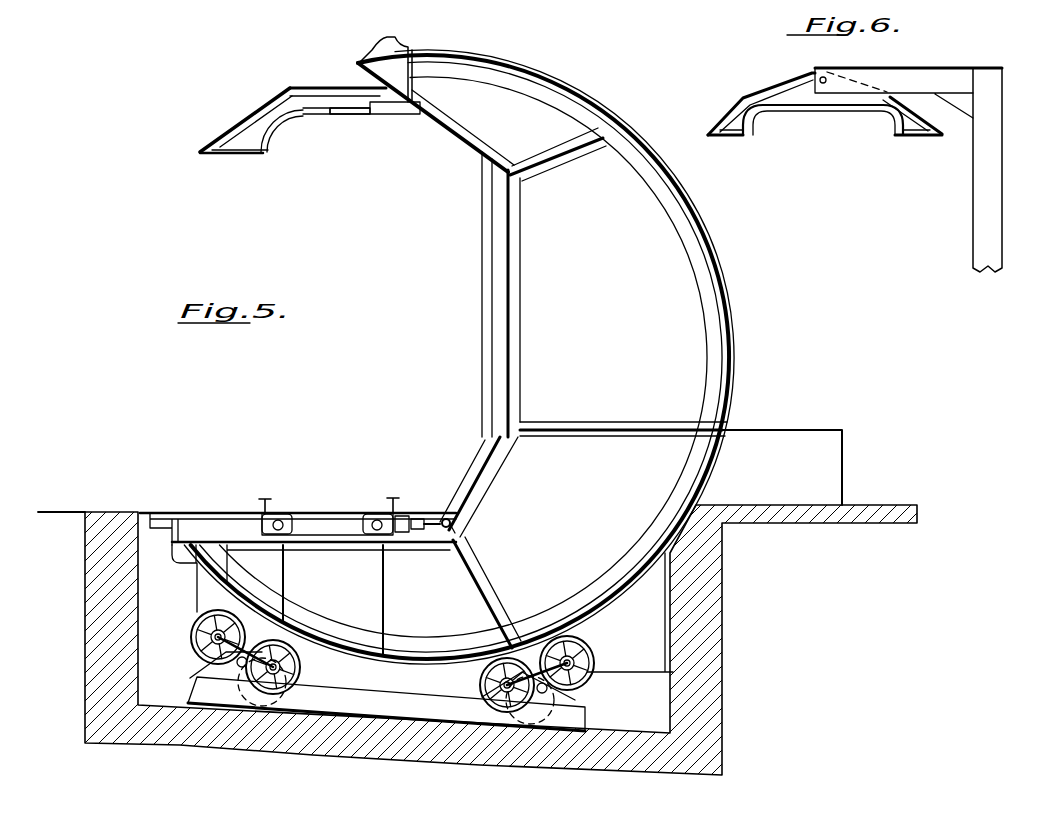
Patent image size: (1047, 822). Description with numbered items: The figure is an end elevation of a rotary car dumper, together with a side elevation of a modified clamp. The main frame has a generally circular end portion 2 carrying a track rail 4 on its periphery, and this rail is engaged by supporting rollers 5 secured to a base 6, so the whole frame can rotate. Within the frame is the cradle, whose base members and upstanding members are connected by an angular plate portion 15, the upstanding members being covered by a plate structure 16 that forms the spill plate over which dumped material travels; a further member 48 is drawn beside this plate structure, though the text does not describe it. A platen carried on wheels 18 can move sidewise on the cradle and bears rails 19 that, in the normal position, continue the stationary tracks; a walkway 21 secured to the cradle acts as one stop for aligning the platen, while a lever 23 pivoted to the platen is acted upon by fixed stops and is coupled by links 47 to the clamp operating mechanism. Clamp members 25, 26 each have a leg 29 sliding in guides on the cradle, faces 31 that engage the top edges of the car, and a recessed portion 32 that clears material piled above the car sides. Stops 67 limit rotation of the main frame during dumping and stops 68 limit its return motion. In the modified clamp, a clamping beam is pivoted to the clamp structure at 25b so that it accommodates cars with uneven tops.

In FIG. 5, the end portion 2 is at (482, 187).
In FIG. 5, the track rail 4 is at (703, 223).
In FIG. 5, the supporting roller 5 is at (196, 641).
In FIG. 5, the base 6 is at (386, 704).
In FIG. 5, the angular plate portion 15 is at (483, 482).
In FIG. 5, the plate structure 16 is at (506, 346).
In FIG. 5, the wheel 18 is at (325, 520).
In FIG. 5, the rail 19 is at (264, 498).
In FIG. 5, the walkway 21 is at (207, 503).
In FIG. 5, the lever 23 is at (410, 514).
In FIG. 6, the clamp member 25 is at (810, 103).
In FIG. 6, the pivot 25b is at (821, 77).
In FIG. 5, the clamp member 26 is at (310, 120).
In FIG. 6, the leg 29 is at (971, 204).
In FIG. 5, the face 31 is at (251, 150).
In FIG. 5, the recessed portion 32 is at (335, 119).
In FIG. 5, the link 47 is at (447, 518).
In FIG. 5, the post 48 is at (481, 289).
In FIG. 5, the stop 67 is at (376, 52).
In FIG. 5, the stop 68 is at (200, 599).